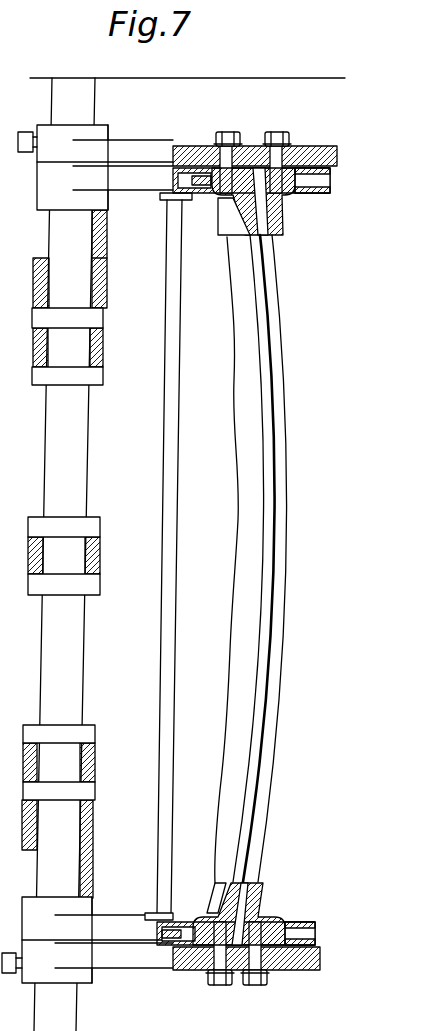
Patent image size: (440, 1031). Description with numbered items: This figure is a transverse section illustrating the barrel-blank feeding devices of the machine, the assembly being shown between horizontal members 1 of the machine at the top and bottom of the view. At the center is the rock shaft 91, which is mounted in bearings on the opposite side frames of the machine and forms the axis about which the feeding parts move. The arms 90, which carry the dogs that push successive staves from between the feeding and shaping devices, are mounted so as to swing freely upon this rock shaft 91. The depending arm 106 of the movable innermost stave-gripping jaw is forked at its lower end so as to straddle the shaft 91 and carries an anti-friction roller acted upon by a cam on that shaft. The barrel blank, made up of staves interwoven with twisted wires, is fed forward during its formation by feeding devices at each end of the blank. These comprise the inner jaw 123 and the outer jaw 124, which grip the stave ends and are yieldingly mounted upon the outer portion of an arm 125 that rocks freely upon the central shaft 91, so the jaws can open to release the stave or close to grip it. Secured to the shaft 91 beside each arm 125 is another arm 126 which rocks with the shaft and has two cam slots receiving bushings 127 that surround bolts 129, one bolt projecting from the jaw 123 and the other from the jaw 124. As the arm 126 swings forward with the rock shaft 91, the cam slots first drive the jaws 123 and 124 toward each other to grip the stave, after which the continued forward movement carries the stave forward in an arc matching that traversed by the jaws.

The frame 1 is at (187, 546).
The arm 90 is at (103, 352).
The rock shaft 91 is at (64, 554).
The depending arm 106 is at (107, 238).
The inner jaw 123 is at (235, 221).
The outer jaw 124 is at (283, 222).
The arm 125 is at (114, 553).
The arm 126 is at (97, 554).
The bushing 127 is at (213, 146).
The bolt 129 is at (229, 131).